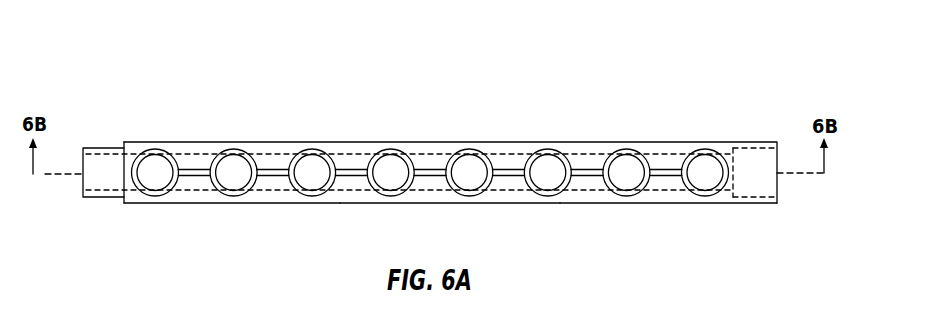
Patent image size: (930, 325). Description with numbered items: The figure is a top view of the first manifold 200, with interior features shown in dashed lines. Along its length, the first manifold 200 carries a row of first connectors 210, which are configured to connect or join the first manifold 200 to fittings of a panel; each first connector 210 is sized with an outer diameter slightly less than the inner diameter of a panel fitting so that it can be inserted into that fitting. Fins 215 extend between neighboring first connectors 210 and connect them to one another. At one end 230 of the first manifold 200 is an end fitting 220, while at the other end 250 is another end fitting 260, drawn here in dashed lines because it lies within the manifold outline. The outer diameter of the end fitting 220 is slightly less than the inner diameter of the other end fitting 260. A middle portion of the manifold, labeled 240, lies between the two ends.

The first manifold 200 is at (133, 44).
The first connectors 210 is at (310, 148).
The fins 215 is at (428, 168).
The end fitting 220 is at (102, 148).
The end 230 is at (153, 205).
The housing segment 240 is at (425, 203).
The other end 250 is at (662, 203).
The end fitting 260 is at (753, 204).